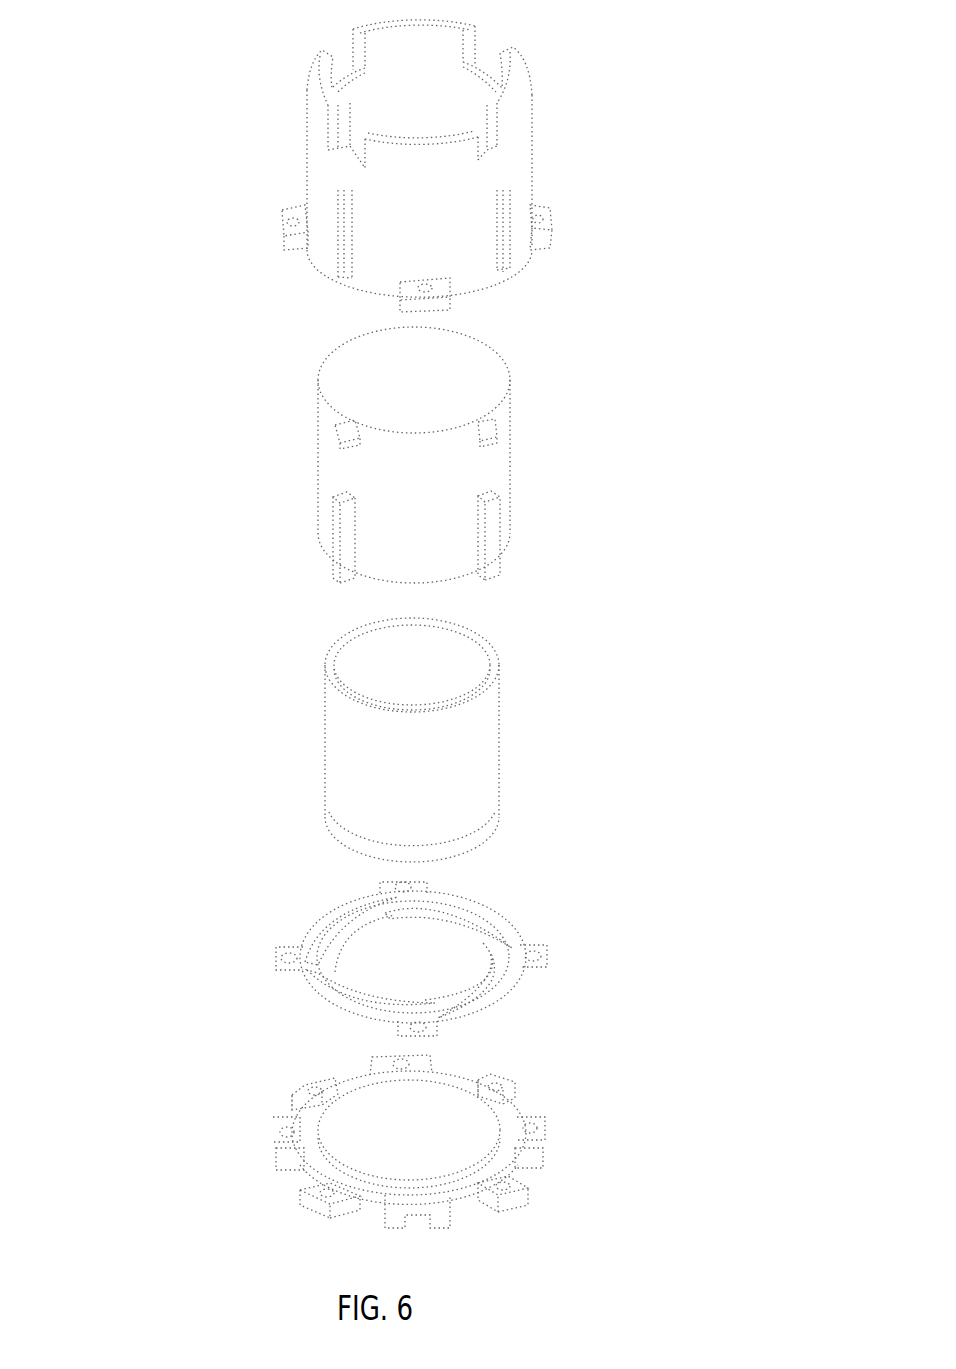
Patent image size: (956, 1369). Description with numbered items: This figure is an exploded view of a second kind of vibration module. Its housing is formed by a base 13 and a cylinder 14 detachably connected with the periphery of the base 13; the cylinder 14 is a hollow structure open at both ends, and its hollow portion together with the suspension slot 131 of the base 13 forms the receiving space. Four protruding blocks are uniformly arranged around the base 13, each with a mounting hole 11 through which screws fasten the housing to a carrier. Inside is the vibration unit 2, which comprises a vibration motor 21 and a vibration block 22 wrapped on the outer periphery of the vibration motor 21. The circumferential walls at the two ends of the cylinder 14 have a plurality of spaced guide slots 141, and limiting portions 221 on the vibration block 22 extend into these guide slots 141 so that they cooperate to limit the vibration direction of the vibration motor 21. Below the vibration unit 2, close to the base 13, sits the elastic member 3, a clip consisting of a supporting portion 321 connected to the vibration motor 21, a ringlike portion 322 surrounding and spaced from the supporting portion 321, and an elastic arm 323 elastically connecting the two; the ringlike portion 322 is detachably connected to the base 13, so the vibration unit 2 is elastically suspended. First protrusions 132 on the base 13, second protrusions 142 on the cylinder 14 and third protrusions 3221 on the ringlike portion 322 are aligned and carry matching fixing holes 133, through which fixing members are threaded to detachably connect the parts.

The cylinder 14 is at (322, 170).
The guide slot 141 is at (524, 292).
The second protrusion 142 is at (546, 205).
The fixing hole 133 is at (559, 232).
The vibration unit 2 is at (118, 435).
The vibration block 22 is at (357, 480).
The limiting portion 221 is at (500, 565).
The vibration motor 21 is at (350, 730).
The elastic member 3 is at (148, 875).
The supporting portion 321 is at (353, 952).
The ringlike portion 322 is at (342, 903).
The third protrusion 3221 is at (538, 946).
The elastic arm 323 is at (330, 965).
The base 13 is at (355, 1085).
The suspension slot 131 is at (342, 1147).
The first protrusion 132 is at (536, 1118).
The mounting hole 11 is at (522, 1200).